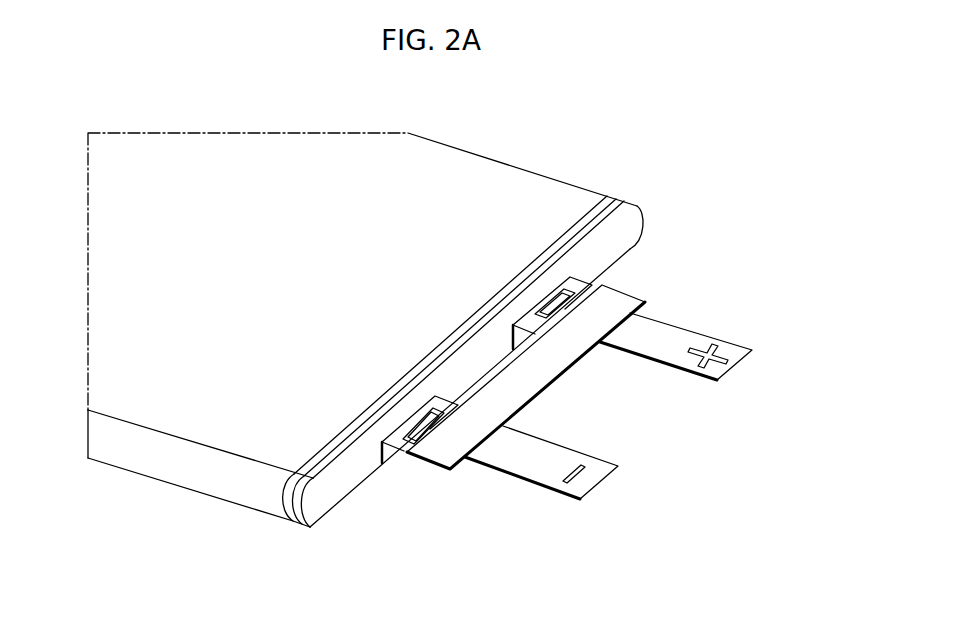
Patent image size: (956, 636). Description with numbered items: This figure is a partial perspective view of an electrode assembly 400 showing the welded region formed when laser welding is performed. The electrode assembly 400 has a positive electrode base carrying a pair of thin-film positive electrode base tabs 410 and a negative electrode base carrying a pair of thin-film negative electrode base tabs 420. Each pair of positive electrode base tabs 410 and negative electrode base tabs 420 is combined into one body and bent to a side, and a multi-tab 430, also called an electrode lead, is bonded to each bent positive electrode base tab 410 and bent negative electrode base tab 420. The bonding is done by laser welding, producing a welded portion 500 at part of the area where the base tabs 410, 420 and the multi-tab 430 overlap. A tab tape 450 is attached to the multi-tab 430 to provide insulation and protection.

The electrode assembly 400 is at (570, 161).
The positive electrode base tabs 410 is at (576, 280).
The negative electrode base tabs 420 is at (398, 446).
The multi-tab 430 is at (627, 491).
The tab tape 450 is at (622, 292).
The welded portion 500 is at (532, 303).